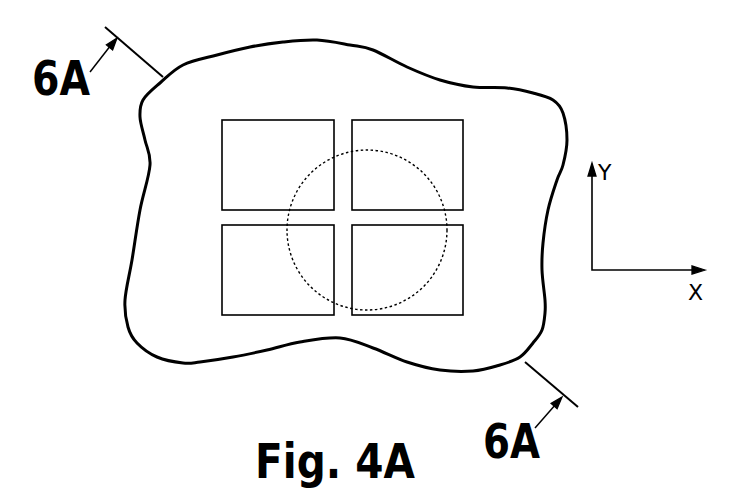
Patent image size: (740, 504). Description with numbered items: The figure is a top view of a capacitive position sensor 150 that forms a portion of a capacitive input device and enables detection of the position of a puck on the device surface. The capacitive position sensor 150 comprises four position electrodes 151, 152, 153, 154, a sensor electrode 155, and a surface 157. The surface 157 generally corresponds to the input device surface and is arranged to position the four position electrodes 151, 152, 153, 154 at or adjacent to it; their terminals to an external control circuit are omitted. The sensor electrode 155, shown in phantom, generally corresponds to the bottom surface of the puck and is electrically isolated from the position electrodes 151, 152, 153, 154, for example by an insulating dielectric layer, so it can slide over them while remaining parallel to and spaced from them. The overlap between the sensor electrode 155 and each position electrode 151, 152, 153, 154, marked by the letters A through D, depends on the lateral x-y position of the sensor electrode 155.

The capacitive position sensor 150 is at (500, 75).
The position electrode 151 is at (232, 147).
The position electrode 152 is at (455, 132).
The position electrode 153 is at (232, 285).
The position electrode 154 is at (452, 303).
The sensor electrode 155 is at (435, 218).
The surface 157 is at (334, 104).